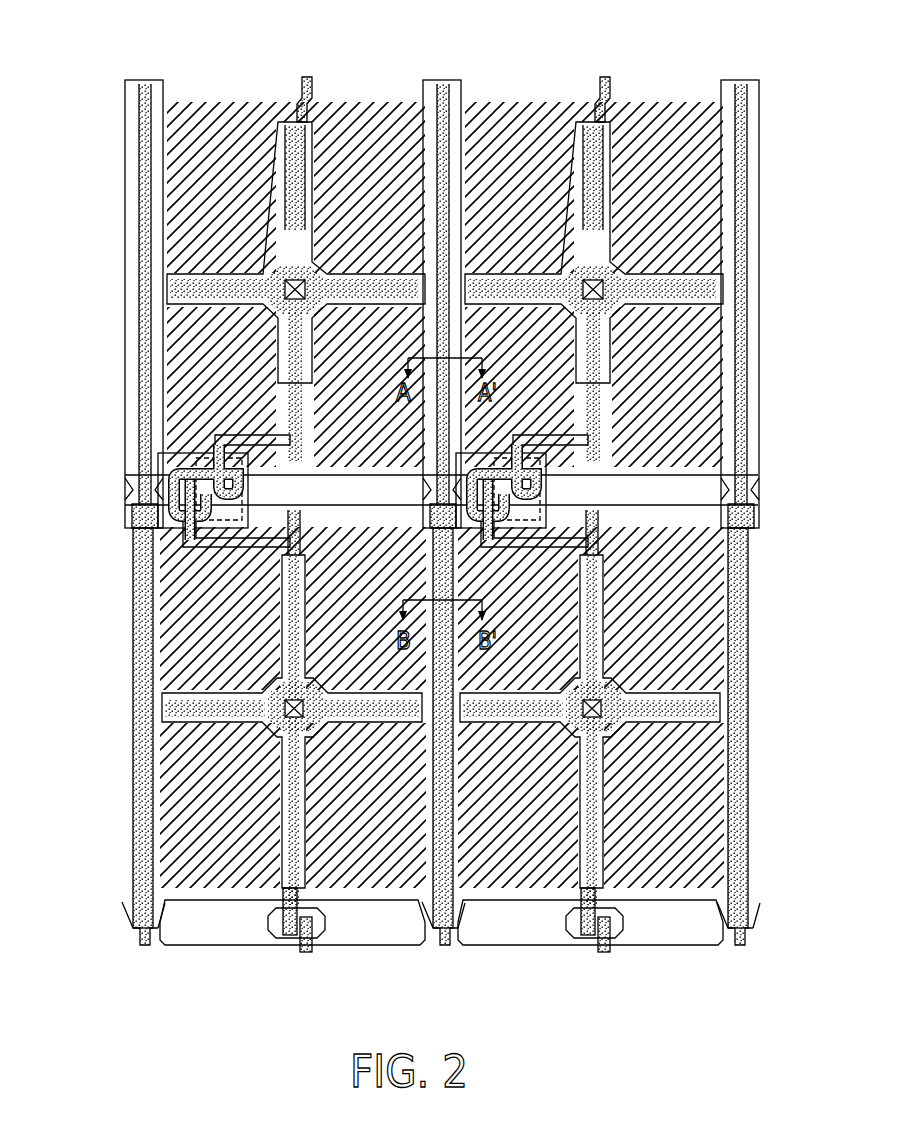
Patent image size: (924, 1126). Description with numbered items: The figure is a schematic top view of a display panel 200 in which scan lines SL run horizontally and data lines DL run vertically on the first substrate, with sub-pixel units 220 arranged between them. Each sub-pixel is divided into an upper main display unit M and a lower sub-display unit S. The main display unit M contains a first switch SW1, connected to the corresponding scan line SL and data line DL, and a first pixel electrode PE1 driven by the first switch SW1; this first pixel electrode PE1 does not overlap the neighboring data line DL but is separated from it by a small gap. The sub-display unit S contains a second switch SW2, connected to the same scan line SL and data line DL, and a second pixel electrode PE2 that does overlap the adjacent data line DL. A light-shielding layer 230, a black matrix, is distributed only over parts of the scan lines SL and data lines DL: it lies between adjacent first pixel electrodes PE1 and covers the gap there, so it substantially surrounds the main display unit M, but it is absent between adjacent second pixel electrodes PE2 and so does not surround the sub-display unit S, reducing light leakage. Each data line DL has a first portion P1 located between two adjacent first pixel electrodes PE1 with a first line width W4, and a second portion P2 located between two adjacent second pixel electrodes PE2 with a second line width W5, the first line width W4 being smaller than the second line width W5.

The light-shielding layer 230 is at (126, 96).
The sub-pixel units 220 is at (425, 62).
The display panel 200 is at (746, 1014).
The first pixel electrode PE1 is at (636, 458).
The second pixel electrode PE2 is at (712, 665).
The first switch SW1 is at (560, 482).
The second switch SW2 is at (570, 583).
The scan lines SL is at (738, 492).
The data lines DL is at (72, 463).
The first portion P1 is at (125, 458).
The second portion P2 is at (131, 558).
The main display unit M is at (805, 328).
The sub-display unit S is at (805, 577).
The first line width W4 is at (150, 80).
The second line width W5 is at (133, 945).